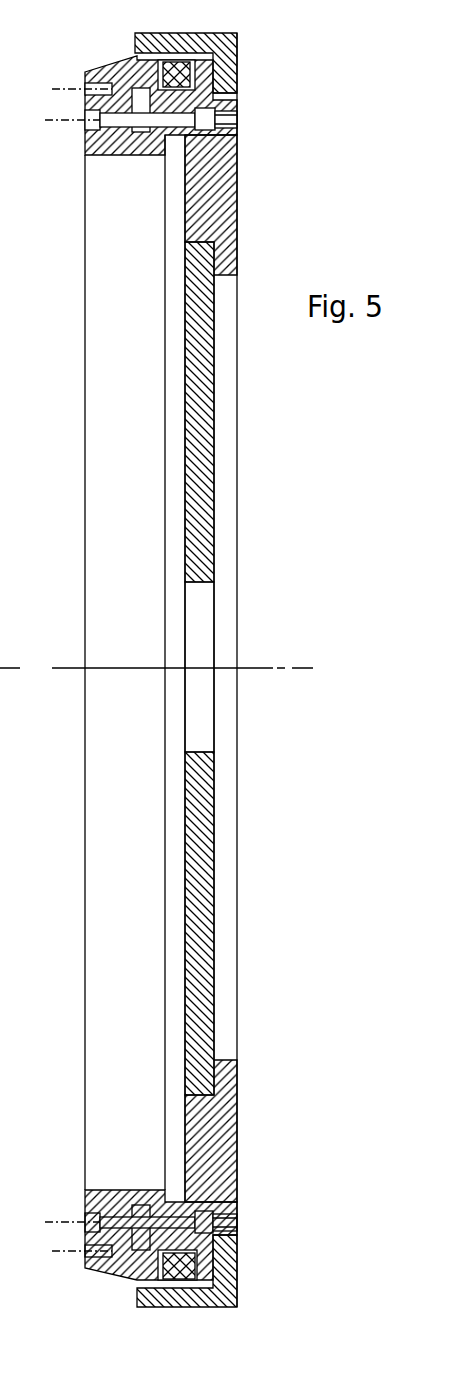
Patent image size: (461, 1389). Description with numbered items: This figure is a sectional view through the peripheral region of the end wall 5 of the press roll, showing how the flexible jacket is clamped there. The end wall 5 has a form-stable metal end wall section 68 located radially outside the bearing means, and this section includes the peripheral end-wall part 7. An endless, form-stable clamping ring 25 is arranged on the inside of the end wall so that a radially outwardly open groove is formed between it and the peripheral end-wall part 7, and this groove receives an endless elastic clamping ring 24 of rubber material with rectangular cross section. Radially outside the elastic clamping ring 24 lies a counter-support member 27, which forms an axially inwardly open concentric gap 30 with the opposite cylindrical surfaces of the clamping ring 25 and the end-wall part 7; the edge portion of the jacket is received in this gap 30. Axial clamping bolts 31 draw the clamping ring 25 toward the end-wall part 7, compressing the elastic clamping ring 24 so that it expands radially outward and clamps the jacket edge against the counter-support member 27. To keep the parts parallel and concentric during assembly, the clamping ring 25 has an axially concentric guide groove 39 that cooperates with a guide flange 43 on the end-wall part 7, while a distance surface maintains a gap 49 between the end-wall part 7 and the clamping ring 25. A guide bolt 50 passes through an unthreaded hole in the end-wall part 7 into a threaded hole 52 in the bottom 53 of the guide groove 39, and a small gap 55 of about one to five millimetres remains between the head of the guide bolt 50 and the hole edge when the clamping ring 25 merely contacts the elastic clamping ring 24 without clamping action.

The end wall 5 is at (238, 445).
The peripheral end-wall part 7 is at (238, 175).
The elastic clamping ring 24 is at (238, 74).
The form-stable clamping ring 25 is at (85, 222).
The counter-support member 27 is at (172, 33).
The concentric gap 30 is at (187, 62).
The axial clamping bolt 31 is at (238, 112).
The guide groove 39 is at (143, 1190).
The guide flange 43 is at (137, 1279).
The gap 49 is at (175, 140).
The guide bolt 50 is at (140, 138).
The threaded hole 52 is at (88, 135).
The bottom of the guide groove 53 is at (118, 89).
The gap 55 is at (238, 118).
The end wall section 68 is at (215, 872).